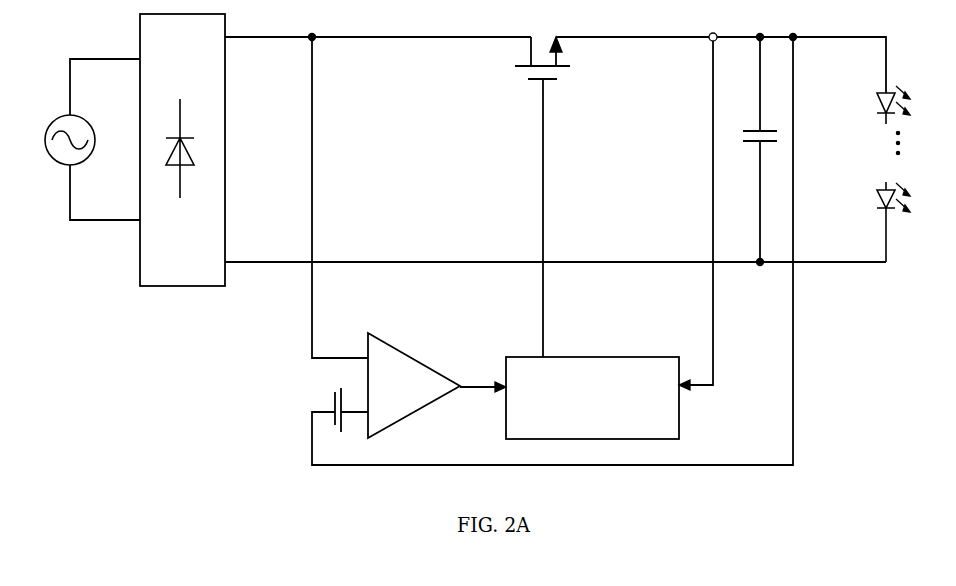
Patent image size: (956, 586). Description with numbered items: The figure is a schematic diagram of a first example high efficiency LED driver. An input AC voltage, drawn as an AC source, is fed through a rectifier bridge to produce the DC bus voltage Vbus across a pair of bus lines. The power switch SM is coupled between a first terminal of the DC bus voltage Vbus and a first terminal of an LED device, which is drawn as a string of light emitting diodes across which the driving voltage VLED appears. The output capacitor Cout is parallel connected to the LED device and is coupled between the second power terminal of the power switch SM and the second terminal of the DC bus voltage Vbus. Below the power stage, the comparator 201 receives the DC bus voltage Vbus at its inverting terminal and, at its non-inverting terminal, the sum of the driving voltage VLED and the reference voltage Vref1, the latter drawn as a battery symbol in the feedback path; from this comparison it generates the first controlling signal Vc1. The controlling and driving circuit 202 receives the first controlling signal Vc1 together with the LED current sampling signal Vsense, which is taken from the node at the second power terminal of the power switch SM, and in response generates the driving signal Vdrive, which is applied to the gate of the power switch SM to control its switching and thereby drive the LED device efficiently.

The comparator 201 is at (428, 395).
The controlling and driving circuit 202 is at (660, 436).
The power switch SM is at (569, 37).
The output capacitor Cout is at (760, 100).
The DC bus voltage Vbus is at (272, 152).
The driving signal Vdrive is at (543, 226).
The LED current sampling signal Vsense is at (712, 308).
The reference voltage Vref1 is at (330, 412).
The first controlling signal Vc1 is at (490, 386).
The driving voltage VLED is at (865, 159).